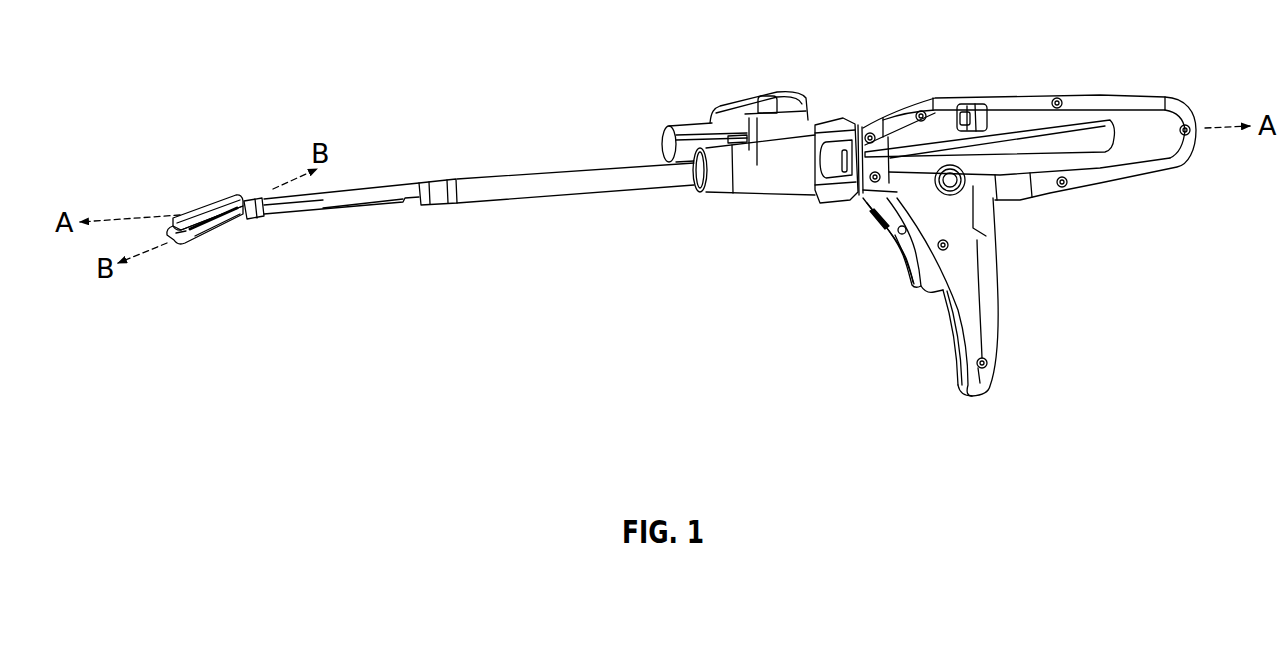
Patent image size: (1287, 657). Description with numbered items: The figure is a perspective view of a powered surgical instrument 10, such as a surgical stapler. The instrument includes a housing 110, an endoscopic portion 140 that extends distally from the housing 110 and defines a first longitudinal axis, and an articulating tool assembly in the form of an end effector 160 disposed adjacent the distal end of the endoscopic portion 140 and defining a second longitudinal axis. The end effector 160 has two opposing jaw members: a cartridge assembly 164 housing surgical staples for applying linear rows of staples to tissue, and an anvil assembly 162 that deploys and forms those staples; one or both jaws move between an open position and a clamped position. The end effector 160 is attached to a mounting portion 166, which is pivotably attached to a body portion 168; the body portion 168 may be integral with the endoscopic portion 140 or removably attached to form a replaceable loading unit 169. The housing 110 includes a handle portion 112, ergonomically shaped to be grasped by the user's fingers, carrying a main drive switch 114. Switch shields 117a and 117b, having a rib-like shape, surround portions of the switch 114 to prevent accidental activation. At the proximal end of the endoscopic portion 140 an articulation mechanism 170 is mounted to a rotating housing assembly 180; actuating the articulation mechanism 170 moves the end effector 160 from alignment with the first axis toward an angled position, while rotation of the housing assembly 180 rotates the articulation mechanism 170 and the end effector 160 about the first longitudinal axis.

The powered surgical instrument 10 is at (545, 58).
The housing 110 is at (1035, 100).
The handle portion 112 is at (1002, 288).
The main drive switch 114 is at (886, 261).
The switch shield 117a is at (871, 218).
The switch shield 117b is at (932, 291).
The endoscopic portion 140 is at (529, 161).
The end effector 160 is at (222, 186).
The anvil assembly 162 is at (185, 214).
The cartridge assembly 164 is at (206, 233).
The mounting portion 166 is at (263, 211).
The body portion 168 is at (363, 209).
The loading unit 169 is at (346, 185).
The articulation mechanism 170 is at (780, 75).
The rotating housing assembly 180 is at (862, 99).